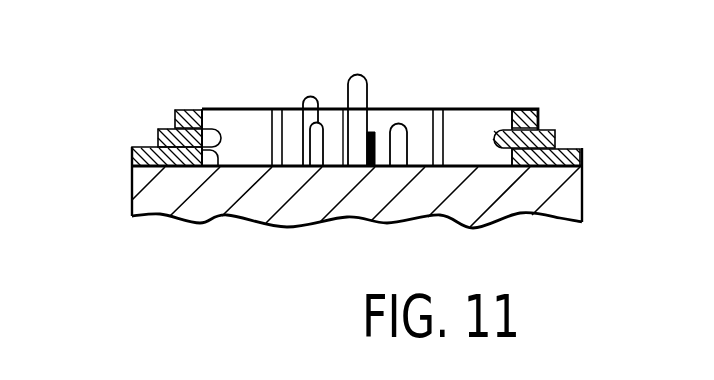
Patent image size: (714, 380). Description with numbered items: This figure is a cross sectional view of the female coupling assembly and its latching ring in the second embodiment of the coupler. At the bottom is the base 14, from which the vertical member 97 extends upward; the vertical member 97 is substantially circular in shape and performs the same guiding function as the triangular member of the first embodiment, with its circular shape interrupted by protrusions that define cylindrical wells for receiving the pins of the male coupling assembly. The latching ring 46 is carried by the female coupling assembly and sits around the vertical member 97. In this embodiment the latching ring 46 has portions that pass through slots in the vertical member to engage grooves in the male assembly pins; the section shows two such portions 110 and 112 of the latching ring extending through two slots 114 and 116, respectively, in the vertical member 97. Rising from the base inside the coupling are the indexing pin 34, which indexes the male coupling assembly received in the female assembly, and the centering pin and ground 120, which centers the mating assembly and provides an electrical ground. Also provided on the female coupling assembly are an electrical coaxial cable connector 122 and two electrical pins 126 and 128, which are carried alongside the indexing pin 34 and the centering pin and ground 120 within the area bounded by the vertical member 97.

The base 14 is at (133, 155).
The latching ring 46 is at (160, 140).
The vertical member 97 is at (185, 112).
The portion of the latching ring 110 is at (212, 137).
The indexing pin 34 is at (303, 104).
The electrical coaxial cable connector 122 is at (343, 137).
The centering pin and ground 120 is at (362, 88).
The electrical pin 128 is at (393, 127).
The portion of the latching ring 112 is at (503, 130).
The slot 116 is at (502, 118).
The slot 114 is at (223, 167).
The electrical pin 126 is at (322, 170).